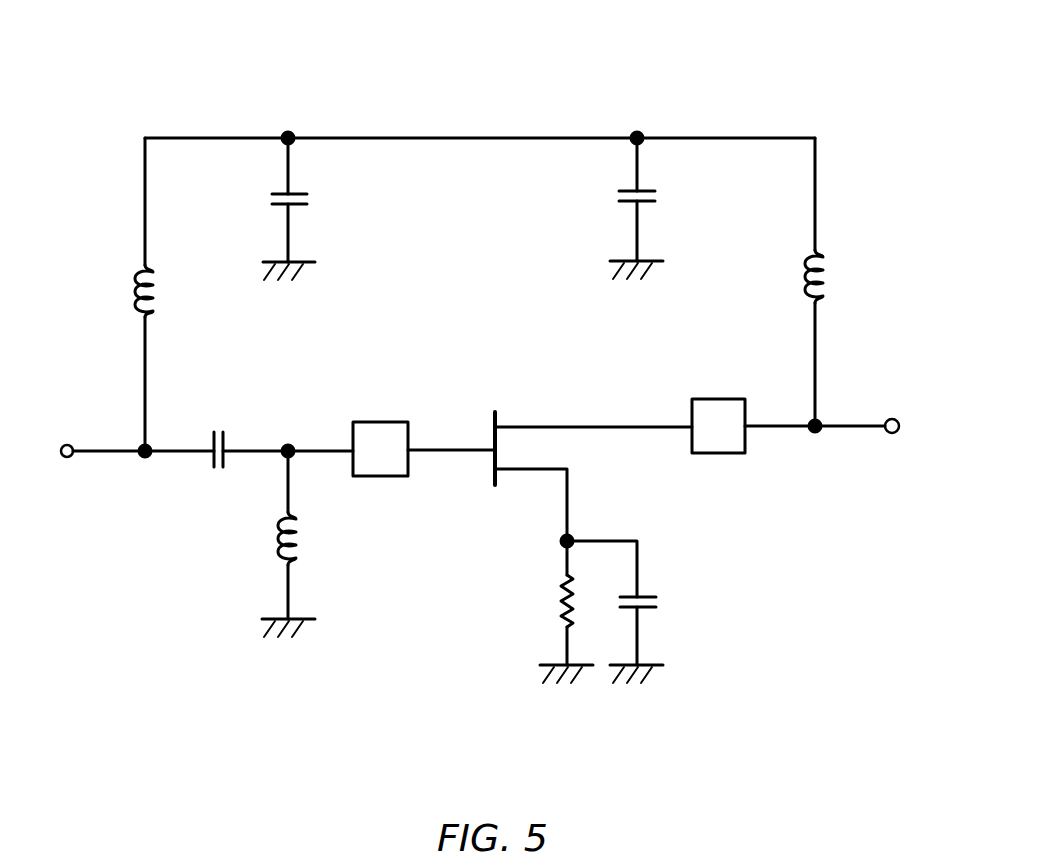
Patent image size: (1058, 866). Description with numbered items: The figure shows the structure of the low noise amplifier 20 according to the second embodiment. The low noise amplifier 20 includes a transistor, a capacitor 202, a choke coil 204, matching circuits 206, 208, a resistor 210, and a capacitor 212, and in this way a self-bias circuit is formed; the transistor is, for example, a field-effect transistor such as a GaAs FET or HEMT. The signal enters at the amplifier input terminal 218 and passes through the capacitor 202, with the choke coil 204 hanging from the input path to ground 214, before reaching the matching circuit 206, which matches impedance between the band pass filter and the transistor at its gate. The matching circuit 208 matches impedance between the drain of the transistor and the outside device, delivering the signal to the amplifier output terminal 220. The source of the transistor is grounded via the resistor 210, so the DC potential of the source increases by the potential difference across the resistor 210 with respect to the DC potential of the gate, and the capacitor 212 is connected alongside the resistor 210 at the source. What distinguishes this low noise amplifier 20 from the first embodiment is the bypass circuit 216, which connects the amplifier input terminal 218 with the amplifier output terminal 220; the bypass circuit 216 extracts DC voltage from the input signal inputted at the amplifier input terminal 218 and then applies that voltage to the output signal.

The low noise amplifier 20 is at (897, 36).
The capacitor 202 is at (222, 416).
The choke coil 204 is at (318, 546).
The matching circuit 206 is at (381, 421).
The matching circuit 208 is at (718, 398).
The resistor 210 is at (538, 610).
The capacitor 212 is at (676, 609).
The ground 214 is at (298, 660).
The bypass circuit 216 is at (480, 137).
The amplifier input terminal 218 is at (71, 444).
The amplifier output terminal 220 is at (895, 418).